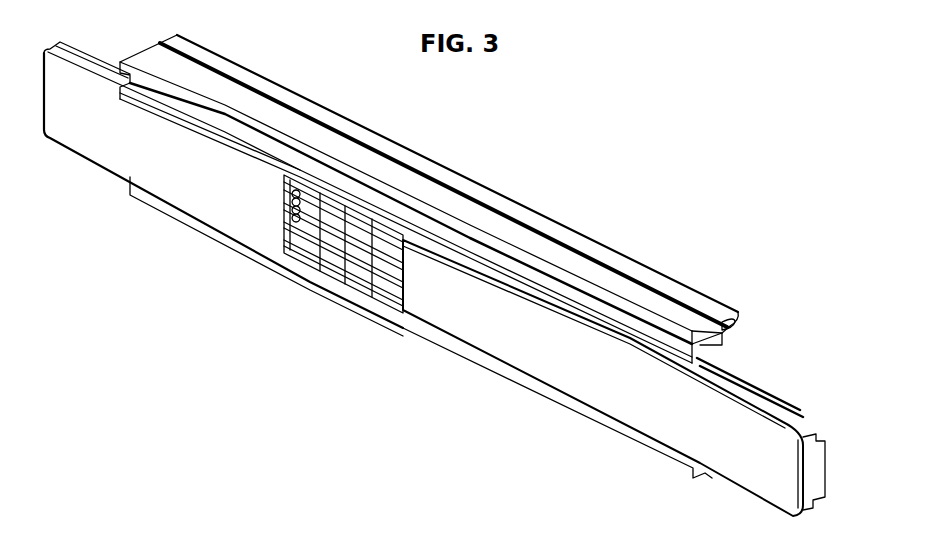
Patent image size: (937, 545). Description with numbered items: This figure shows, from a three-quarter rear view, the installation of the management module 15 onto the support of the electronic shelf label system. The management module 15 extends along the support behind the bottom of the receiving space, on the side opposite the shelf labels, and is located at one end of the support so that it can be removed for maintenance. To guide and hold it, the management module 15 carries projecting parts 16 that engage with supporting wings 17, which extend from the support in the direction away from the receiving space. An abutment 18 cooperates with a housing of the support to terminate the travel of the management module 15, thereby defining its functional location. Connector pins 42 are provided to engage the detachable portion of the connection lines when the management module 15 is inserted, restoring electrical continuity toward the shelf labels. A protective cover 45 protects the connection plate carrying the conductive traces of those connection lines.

The protective cover 45 is at (138, 152).
The connector pins 42 is at (302, 227).
The supporting wings 17 is at (667, 357).
The projecting parts 16 is at (760, 393).
The management module 15 is at (773, 410).
The abutment 18 is at (813, 472).